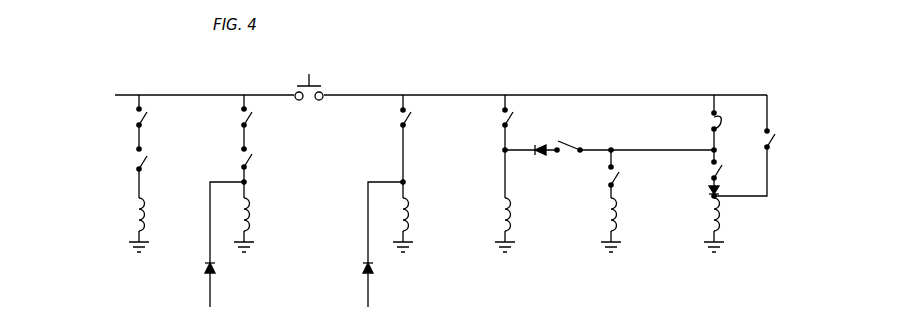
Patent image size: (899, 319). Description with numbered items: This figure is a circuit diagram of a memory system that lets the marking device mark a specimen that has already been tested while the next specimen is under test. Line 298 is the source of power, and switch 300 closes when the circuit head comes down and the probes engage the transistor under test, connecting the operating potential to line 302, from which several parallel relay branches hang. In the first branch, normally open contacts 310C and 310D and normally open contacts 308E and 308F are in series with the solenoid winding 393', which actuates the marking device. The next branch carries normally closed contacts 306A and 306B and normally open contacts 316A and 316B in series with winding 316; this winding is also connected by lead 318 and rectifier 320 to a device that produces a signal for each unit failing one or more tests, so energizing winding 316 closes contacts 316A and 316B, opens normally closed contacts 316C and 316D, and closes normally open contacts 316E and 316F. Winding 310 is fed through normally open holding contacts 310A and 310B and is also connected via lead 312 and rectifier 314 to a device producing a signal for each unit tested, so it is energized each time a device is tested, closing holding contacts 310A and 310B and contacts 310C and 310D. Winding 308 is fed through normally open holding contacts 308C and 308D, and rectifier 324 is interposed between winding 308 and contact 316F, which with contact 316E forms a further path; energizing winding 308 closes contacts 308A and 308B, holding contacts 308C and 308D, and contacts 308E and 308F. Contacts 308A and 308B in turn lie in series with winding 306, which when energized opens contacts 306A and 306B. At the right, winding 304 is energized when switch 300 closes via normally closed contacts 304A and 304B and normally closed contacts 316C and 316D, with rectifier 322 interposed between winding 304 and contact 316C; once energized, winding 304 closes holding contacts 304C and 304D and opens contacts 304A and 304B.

The line 298 is at (161, 95).
The switch 300 is at (314, 86).
The line 302 is at (470, 95).
The normally open contact 310C is at (136, 109).
The normally open contact 310D is at (146, 118).
The normally open contact 308E is at (136, 149).
The normally open contact 308F is at (146, 159).
The solenoid winding 393' is at (111, 225).
The normally closed contact 306A is at (241, 109).
The normally closed contact 306B is at (251, 120).
The normally open contact 316A is at (241, 149).
The normally open contact 316B is at (251, 161).
The winding 316 is at (255, 214).
The lead 318 is at (210, 230).
The rectifier 320 is at (208, 270).
The normally open holding contact 310A is at (400, 110).
The normally open holding contact 310B is at (408, 122).
The winding 310 is at (411, 212).
The lead 312 is at (368, 238).
The rectifier 314 is at (376, 270).
The normally open holding contact 308C is at (502, 110).
The normally open holding contact 308D is at (511, 120).
The rectifier 324 is at (538, 153).
The normally open contact 316F is at (557, 153).
The normally open contact 316E is at (566, 144).
The normally open contact 308A is at (608, 167).
The normally open contact 308B is at (618, 181).
The winding 308 is at (513, 213).
The winding 306 is at (619, 220).
The normally closed contact 304A is at (711, 113).
The normally closed contact 304B is at (737, 128).
The normally closed contact 316D is at (711, 162).
The normally closed contact 316C is at (720, 172).
The rectifier 322 is at (710, 190).
The winding 304 is at (722, 218).
The holding contact 304C is at (770, 128).
The holding contact 304D is at (774, 143).